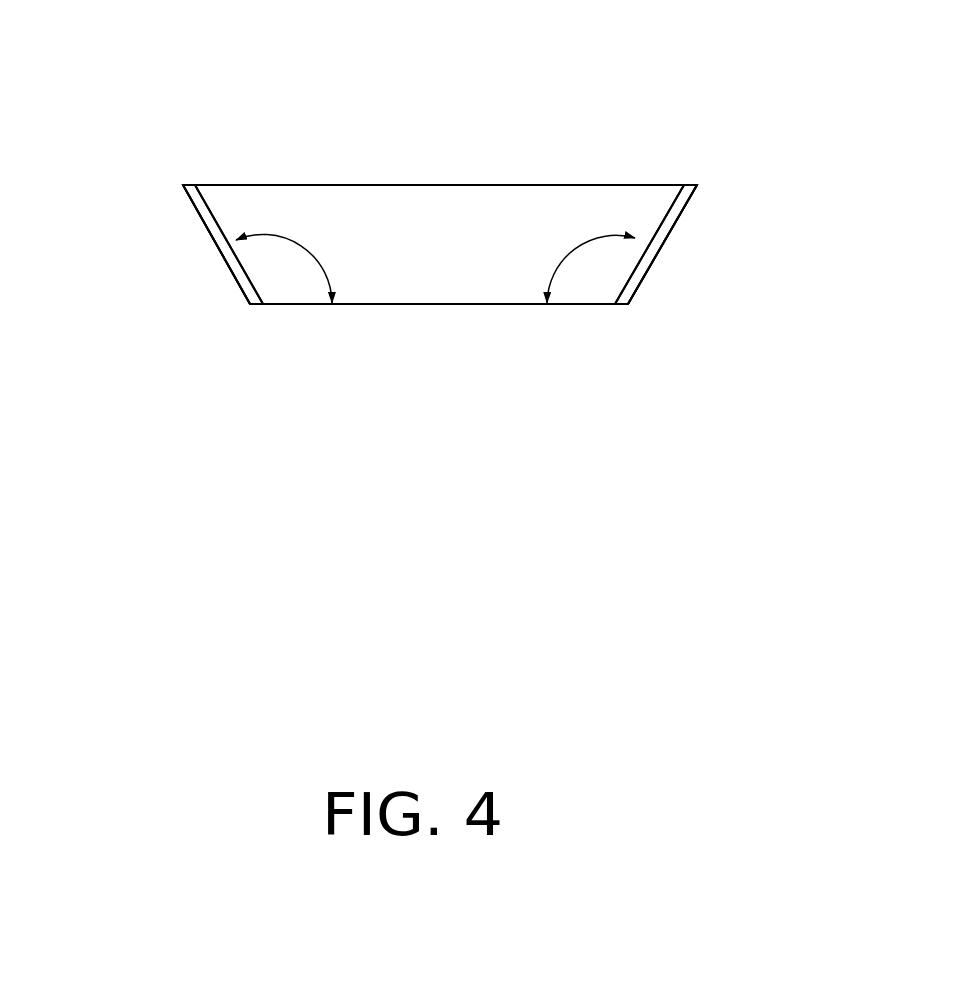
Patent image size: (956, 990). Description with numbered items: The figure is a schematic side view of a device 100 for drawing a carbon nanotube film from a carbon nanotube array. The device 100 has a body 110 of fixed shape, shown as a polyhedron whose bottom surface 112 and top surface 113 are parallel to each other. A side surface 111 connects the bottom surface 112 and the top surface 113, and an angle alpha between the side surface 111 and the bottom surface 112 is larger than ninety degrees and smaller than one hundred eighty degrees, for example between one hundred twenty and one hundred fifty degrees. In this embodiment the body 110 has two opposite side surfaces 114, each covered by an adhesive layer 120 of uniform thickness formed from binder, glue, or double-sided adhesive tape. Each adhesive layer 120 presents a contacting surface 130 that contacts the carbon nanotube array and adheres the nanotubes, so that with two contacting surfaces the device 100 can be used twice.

The device 100 is at (451, 206).
The body 110 is at (400, 272).
The side surface 111 is at (216, 209).
The bottom surface 112 is at (502, 306).
The top surface 113 is at (453, 185).
The opposite side surfaces 114 is at (655, 224).
The adhesive layer 120 is at (198, 204).
The contacting surface 130 is at (212, 238).